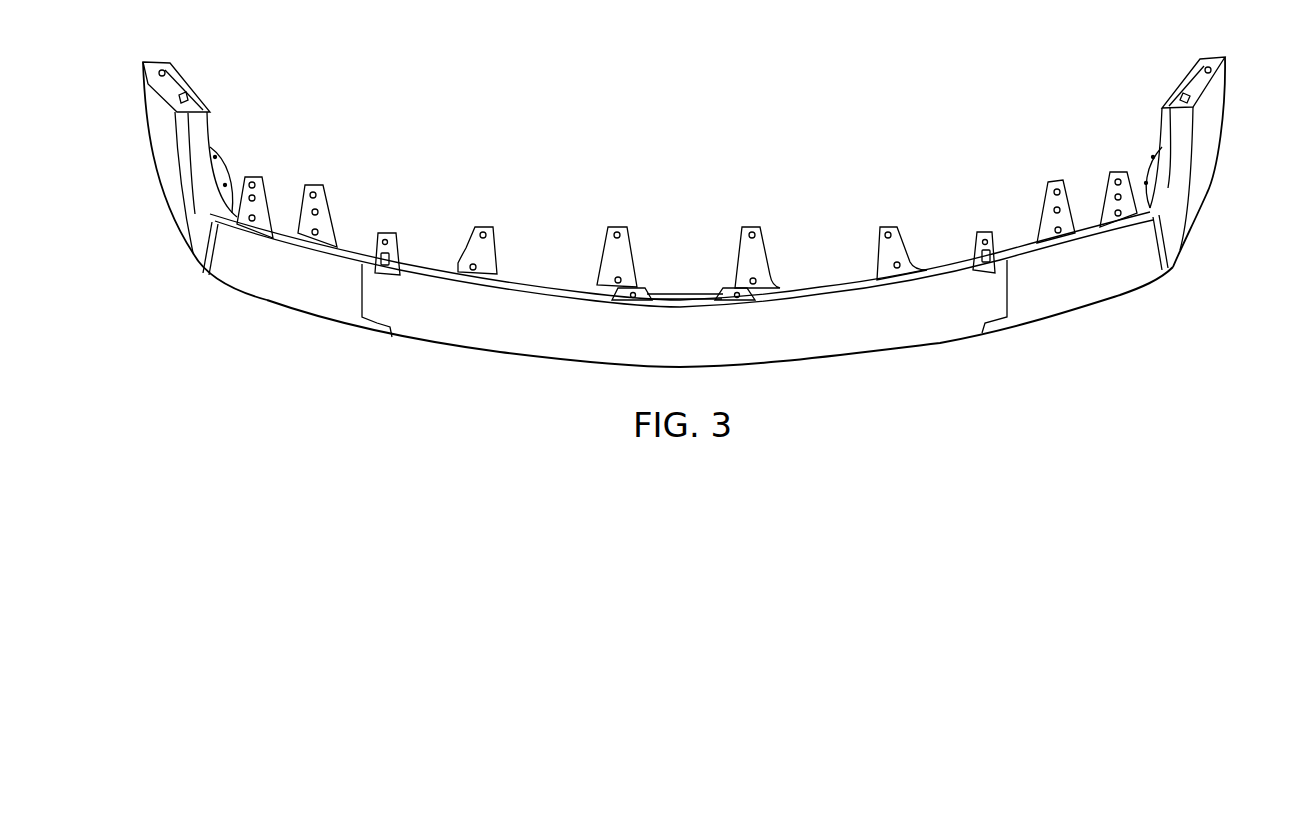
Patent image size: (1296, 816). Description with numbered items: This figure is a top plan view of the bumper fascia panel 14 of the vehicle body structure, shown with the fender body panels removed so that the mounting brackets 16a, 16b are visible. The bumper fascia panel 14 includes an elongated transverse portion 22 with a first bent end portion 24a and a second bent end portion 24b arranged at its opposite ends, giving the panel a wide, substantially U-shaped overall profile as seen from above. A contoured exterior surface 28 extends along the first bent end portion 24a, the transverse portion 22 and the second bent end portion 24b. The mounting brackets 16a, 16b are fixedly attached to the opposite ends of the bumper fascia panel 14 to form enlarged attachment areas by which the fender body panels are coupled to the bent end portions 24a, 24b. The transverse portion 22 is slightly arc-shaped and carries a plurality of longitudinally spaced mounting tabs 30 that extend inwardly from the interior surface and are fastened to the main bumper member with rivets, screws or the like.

The bumper fascia panel 14 is at (873, 351).
The mounting bracket 16a is at (1200, 82).
The mounting bracket 16b is at (172, 85).
The elongated transverse portion 22 is at (793, 328).
The first bent end portion 24a is at (1203, 162).
The second bent end portion 24b is at (170, 177).
The contoured exterior surface 28 is at (1078, 275).
The mounting tabs 30 is at (397, 240).